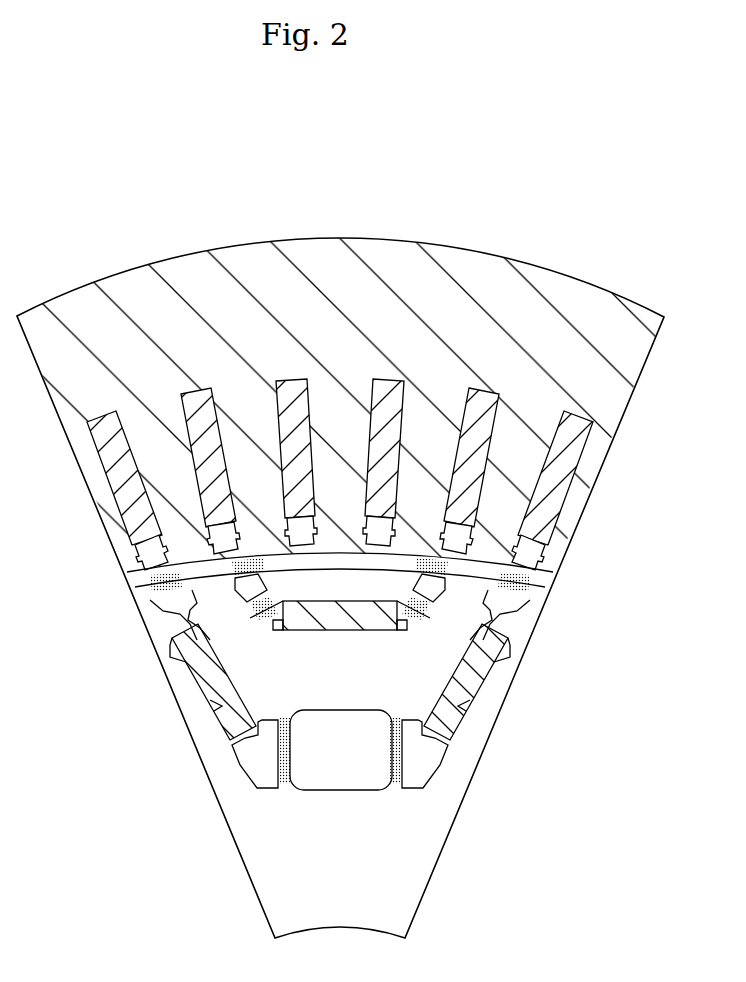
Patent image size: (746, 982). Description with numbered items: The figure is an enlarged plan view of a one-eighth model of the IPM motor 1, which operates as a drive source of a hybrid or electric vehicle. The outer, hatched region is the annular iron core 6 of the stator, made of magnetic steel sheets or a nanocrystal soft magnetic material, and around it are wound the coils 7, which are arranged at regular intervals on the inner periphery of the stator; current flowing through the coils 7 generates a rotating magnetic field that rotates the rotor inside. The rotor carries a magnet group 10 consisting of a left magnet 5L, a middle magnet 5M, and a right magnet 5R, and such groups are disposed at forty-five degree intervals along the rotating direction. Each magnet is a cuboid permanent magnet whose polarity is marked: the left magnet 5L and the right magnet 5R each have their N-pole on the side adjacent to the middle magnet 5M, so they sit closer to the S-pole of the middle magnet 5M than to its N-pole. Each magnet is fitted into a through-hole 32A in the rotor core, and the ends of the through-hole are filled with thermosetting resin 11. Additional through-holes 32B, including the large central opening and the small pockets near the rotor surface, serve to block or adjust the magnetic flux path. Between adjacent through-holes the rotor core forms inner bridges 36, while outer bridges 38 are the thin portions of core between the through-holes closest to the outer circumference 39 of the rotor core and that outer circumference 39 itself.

The IPM motor 1 is at (639, 215).
The left magnet 5L is at (268, 594).
The middle magnet 5M is at (362, 625).
The right magnet 5R is at (412, 594).
The iron core 6 is at (600, 372).
The coil 7 is at (580, 435).
The magnet group 10 is at (447, 197).
The resin 11 is at (297, 678).
The through-hole 32A is at (341, 733).
The through-hole 32B is at (373, 780).
The inner bridge 36 is at (339, 717).
The outer bridge 38 is at (340, 668).
The outer circumference 39 is at (530, 578).